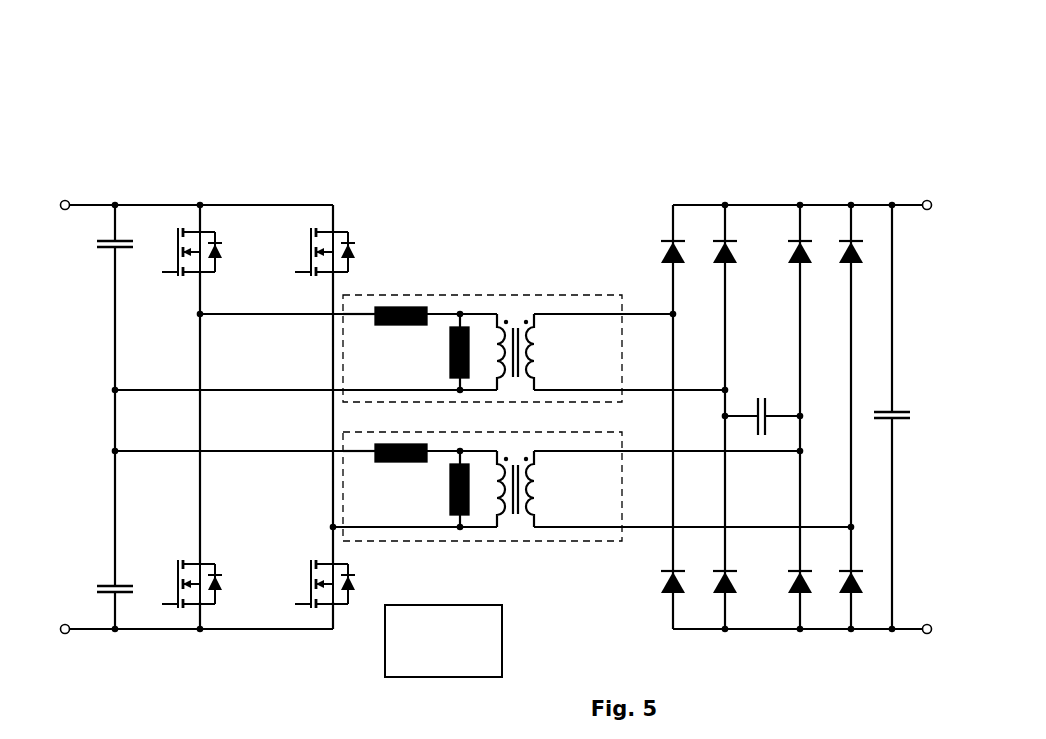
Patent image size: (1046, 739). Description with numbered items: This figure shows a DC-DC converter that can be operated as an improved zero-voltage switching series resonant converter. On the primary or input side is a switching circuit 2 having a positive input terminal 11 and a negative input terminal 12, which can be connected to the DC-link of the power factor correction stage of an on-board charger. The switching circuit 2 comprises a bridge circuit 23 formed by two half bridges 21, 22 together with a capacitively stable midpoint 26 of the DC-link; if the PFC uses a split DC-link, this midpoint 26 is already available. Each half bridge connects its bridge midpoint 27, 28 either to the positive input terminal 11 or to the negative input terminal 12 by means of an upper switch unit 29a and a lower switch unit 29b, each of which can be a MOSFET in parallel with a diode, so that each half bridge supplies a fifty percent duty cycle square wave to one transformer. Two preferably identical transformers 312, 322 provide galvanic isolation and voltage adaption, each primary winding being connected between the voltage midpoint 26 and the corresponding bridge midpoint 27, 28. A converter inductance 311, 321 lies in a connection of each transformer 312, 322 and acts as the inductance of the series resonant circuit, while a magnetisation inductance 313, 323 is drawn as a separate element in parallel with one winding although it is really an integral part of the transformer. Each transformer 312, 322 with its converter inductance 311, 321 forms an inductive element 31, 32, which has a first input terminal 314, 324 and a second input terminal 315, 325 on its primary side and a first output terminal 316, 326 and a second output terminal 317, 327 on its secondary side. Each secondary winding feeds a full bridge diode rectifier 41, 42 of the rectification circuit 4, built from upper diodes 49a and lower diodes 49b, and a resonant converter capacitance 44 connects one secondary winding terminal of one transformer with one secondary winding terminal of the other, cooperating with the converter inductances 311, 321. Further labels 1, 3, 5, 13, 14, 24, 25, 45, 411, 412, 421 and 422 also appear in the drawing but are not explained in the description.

The power conversion device 1 is at (134, 44).
The switching circuit 2 is at (55, 81).
The transformer unit 3 is at (476, 232).
The rectification circuit 4 is at (858, 128).
The controller 5 is at (475, 640).
The positive input terminal 11 is at (65, 200).
The negative input terminal 12 is at (72, 640).
The first output terminal 13 is at (901, 200).
The second output terminal 14 is at (922, 640).
The half bridge 21 is at (163, 183).
The half bridge 22 is at (355, 183).
The bridge circuit 23 is at (163, 130).
The first input capacitor 24 is at (112, 248).
The second input capacitor 25 is at (112, 580).
The capacitive stable midpoint 26 is at (114, 408).
The bridge midpoint 27 is at (202, 320).
The bridge midpoint 28 is at (330, 524).
The upper switch unit 29a is at (205, 274).
The lower switch unit 29b is at (198, 558).
The inductive element 31 is at (574, 296).
The inductive element 32 is at (582, 544).
The converter inductance 311 is at (413, 304).
The transformer 312 is at (528, 334).
The magnetisation inductance 313 is at (450, 346).
The first input terminal 314 is at (343, 313).
The second input terminal 315 is at (355, 392).
The first output terminal 316 is at (577, 313).
The second output terminal 317 is at (541, 390).
The converter inductance 321 is at (436, 436).
The transformer 322 is at (565, 489).
The magnetisation inductance 323 is at (422, 490).
The first input terminal 324 is at (381, 431).
The second input terminal 325 is at (420, 511).
The first output terminal 326 is at (652, 431).
The second output terminal 327 is at (692, 510).
The first rectifier 41 is at (735, 183).
The second rectifier 42 is at (790, 183).
The converter capacitance 44 is at (760, 398).
The output capacitor 45 is at (896, 412).
The upper diodes 49a is at (666, 250).
The lower diodes 49b is at (668, 592).
The first connection node 411 is at (675, 314).
The second connection node 412 is at (724, 390).
The third connection node 421 is at (800, 451).
The fourth connection node 422 is at (854, 526).